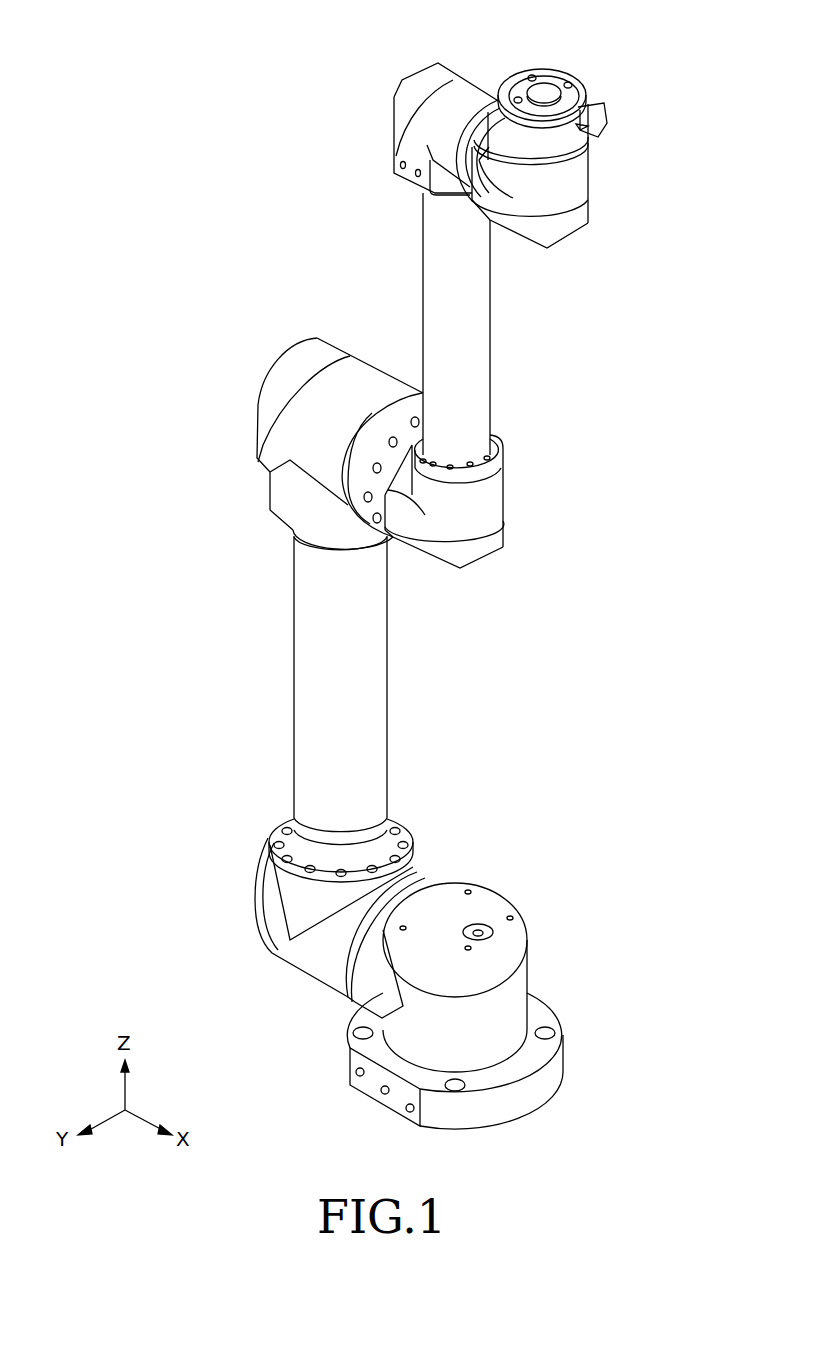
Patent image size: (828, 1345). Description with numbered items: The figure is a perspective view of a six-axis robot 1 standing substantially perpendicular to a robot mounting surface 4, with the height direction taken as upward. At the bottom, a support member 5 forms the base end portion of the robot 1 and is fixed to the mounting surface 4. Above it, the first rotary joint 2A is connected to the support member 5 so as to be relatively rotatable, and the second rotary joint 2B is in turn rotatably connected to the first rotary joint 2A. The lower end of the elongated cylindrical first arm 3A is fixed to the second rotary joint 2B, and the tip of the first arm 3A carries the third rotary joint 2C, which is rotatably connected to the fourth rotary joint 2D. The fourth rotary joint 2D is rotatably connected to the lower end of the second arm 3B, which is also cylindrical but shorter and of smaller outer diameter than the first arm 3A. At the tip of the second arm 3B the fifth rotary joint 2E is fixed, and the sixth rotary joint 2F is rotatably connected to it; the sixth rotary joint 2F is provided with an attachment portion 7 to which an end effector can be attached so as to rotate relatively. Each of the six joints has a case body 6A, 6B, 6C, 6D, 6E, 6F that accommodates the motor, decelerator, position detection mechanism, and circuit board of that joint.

The robot 1 is at (288, 73).
The first rotary joint 2A is at (518, 1005).
The second rotary joint 2B is at (300, 965).
The third rotary joint 2C is at (365, 372).
The fourth rotary joint 2D is at (493, 491).
The fifth rotary joint 2E is at (472, 92).
The sixth rotary joint 2F is at (582, 172).
The first arm 3A is at (376, 661).
The second arm 3B is at (481, 323).
The robot mounting surface 4 is at (688, 1107).
The support member 5 is at (512, 1108).
The case body 6A is at (511, 955).
The case body 6B is at (260, 901).
The case body 6C is at (300, 352).
The case body 6D is at (493, 539).
The case body 6E is at (394, 110).
The case body 6F is at (582, 211).
The attachment portion 7 is at (547, 70).